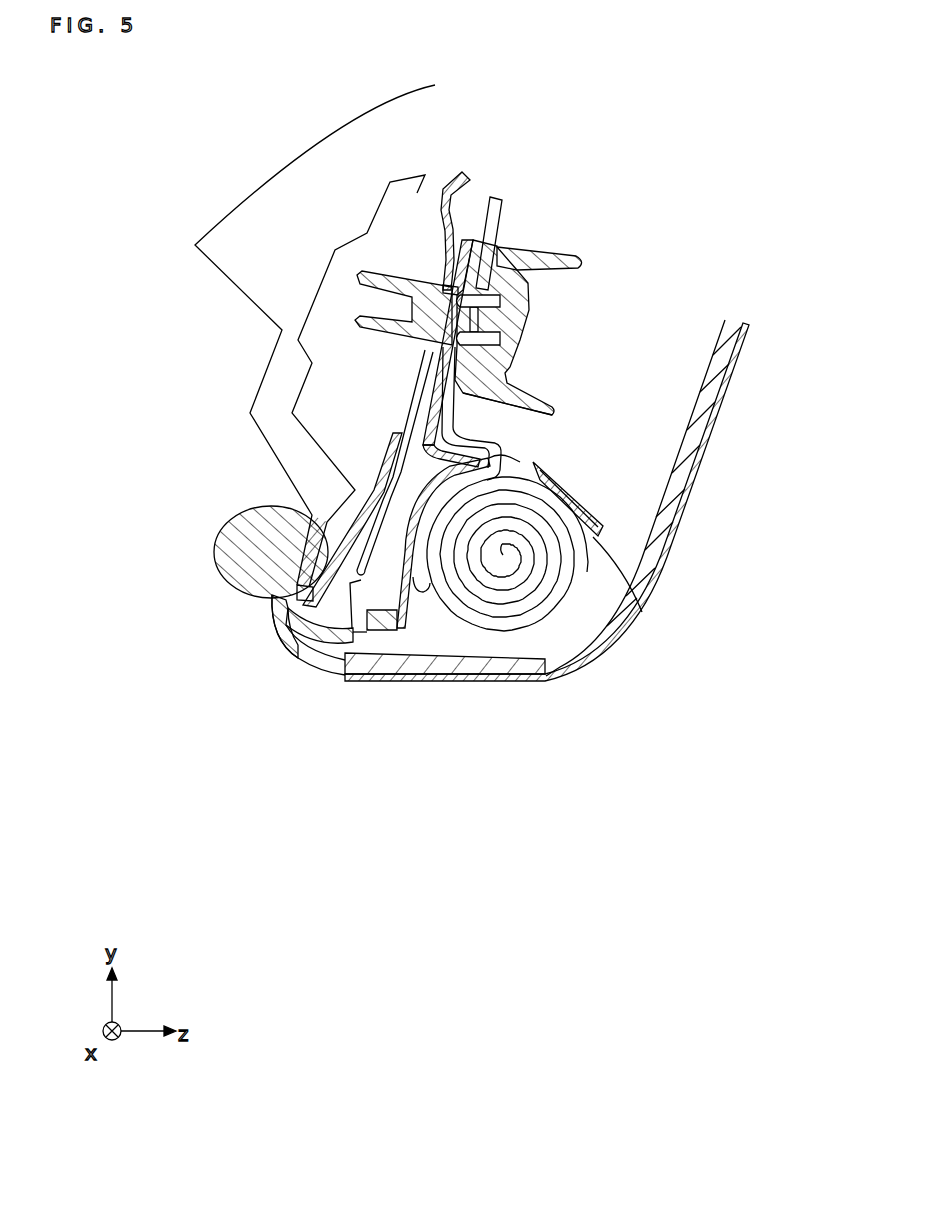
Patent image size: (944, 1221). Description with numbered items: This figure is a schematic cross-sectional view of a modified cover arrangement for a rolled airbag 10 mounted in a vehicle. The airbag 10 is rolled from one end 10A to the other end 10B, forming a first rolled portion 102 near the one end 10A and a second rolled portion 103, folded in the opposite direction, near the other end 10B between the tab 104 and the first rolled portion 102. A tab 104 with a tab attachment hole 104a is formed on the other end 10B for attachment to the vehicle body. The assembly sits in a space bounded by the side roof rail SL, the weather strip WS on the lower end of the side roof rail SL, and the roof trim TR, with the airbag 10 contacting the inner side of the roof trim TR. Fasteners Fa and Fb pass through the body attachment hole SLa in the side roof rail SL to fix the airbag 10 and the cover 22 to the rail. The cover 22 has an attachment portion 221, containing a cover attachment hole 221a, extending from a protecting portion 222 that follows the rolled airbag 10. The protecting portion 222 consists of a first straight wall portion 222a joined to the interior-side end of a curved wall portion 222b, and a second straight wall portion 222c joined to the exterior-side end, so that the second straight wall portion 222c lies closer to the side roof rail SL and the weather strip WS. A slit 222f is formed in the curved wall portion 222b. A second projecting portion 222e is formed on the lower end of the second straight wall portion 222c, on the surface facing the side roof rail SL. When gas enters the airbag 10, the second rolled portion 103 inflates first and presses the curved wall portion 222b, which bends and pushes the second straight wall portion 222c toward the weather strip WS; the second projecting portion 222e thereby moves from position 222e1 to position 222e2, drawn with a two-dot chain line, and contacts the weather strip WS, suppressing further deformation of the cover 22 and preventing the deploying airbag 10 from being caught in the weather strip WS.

The side roof rail SL is at (453, 177).
The tab 104 is at (503, 204).
The attachment portion 221 is at (483, 241).
The fastener Fa is at (578, 264).
The body attachment hole SLa is at (450, 287).
The fastener Fb is at (410, 303).
The tab attachment hole 104a is at (481, 296).
The cover attachment hole 221a is at (470, 347).
The roof trim TR is at (728, 352).
The cover 22 is at (594, 494).
The slit 222f is at (521, 462).
The curved wall portion 222b is at (432, 487).
The other end 10B is at (467, 482).
The first straight wall portion 222a is at (598, 536).
The protecting portion 222 is at (565, 598).
The first rolled portion 102 is at (610, 643).
The weather strip WS is at (227, 587).
The second projecting portion 222e is at (320, 699).
The position of second projecting portion 222e1 is at (377, 660).
The position of second projecting portion 222e2 is at (327, 687).
The second straight wall portion 222c is at (415, 600).
The second rolled portion 103 is at (454, 674).
The airbag 10 is at (506, 650).
The one end 10A is at (503, 556).